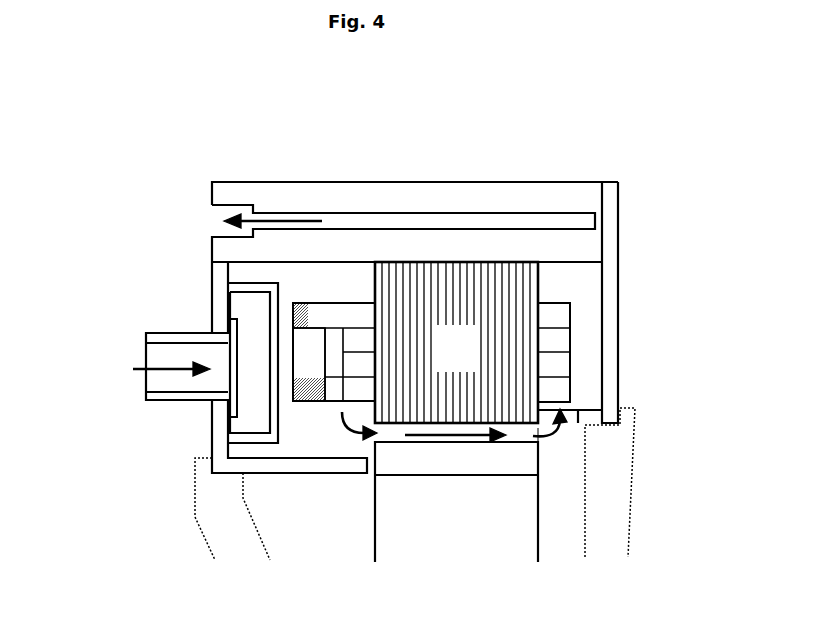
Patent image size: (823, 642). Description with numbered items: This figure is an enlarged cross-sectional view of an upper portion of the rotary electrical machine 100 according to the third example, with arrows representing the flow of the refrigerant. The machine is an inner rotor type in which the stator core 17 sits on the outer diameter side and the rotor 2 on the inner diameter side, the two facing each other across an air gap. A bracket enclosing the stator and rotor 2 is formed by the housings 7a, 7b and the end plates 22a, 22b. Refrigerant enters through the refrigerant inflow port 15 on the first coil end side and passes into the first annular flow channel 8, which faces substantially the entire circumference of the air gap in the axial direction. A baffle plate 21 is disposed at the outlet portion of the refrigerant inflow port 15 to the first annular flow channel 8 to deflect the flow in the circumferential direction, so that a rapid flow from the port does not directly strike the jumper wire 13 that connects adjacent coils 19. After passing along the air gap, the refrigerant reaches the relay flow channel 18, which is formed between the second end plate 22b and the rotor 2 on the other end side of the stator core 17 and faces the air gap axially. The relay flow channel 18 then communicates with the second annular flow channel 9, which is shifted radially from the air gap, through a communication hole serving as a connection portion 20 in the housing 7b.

The rotary electrical machine 100 is at (168, 133).
The rotor 2 is at (538, 508).
The housing 7a is at (215, 307).
The housing 7b is at (618, 220).
The first annular flow channel 8 is at (247, 278).
The second annular flow channel 9 is at (580, 287).
The jumper wire 13 is at (307, 380).
The refrigerant inflow port 15 is at (146, 398).
The stator core 17 is at (456, 342).
The relay flow channel 18 is at (555, 437).
The coils 19 is at (557, 345).
The connection portion 20 is at (575, 412).
The baffle plate 21 is at (277, 408).
The end plate 22a is at (207, 543).
The end plate 22b is at (632, 510).